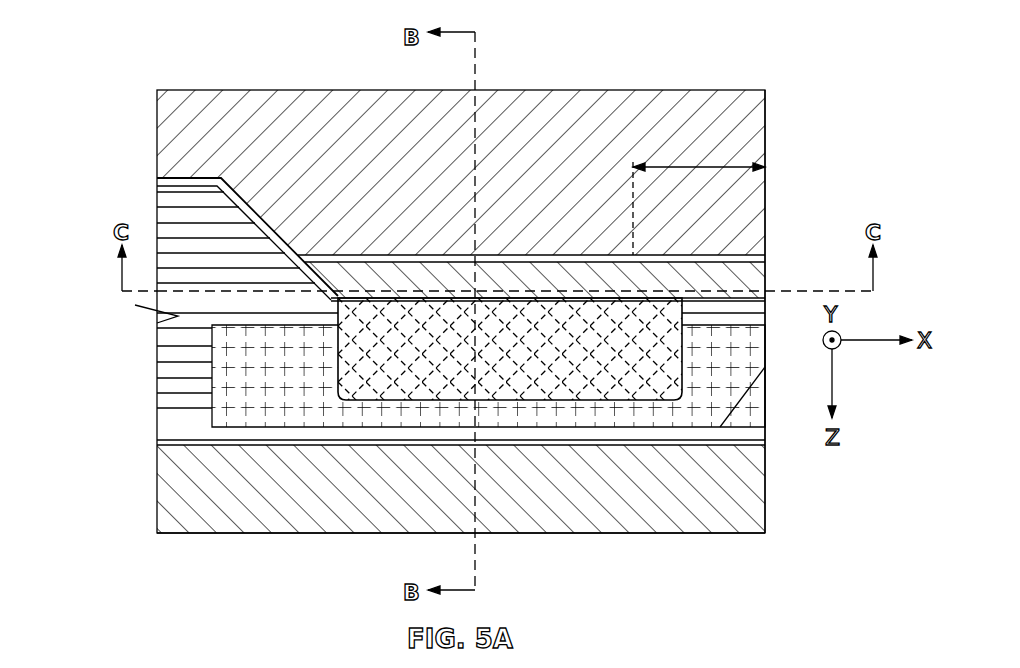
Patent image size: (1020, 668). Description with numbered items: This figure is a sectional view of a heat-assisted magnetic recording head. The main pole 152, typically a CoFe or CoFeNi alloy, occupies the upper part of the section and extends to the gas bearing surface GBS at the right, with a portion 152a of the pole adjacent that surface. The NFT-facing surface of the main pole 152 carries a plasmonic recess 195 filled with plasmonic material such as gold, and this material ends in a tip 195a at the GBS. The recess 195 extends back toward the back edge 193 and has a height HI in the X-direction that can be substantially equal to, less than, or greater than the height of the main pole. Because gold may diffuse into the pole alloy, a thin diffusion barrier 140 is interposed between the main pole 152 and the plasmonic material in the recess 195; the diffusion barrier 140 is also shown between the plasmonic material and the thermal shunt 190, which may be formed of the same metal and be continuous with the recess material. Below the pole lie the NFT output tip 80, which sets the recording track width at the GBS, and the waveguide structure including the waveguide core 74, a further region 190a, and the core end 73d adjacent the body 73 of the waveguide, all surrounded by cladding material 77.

The main pole 152 is at (747, 123).
The write pole tip portion 152a is at (765, 228).
The gas bearing surface GBS is at (765, 180).
The plasmonic recess 195 is at (513, 275).
The plasmonic recess tip 195a is at (765, 278).
The diffusion barrier 140 is at (742, 298).
The cladding material 77 is at (208, 308).
The waveguide core 74 is at (252, 340).
The NFT output tip 80 is at (737, 378).
The waveguide core end 73d is at (767, 483).
The substrate layer 73 is at (597, 513).
The thermal shunt 190 is at (383, 382).
The second region 190a is at (663, 318).
The back edge 193 is at (332, 295).
The height H1 HI is at (699, 206).